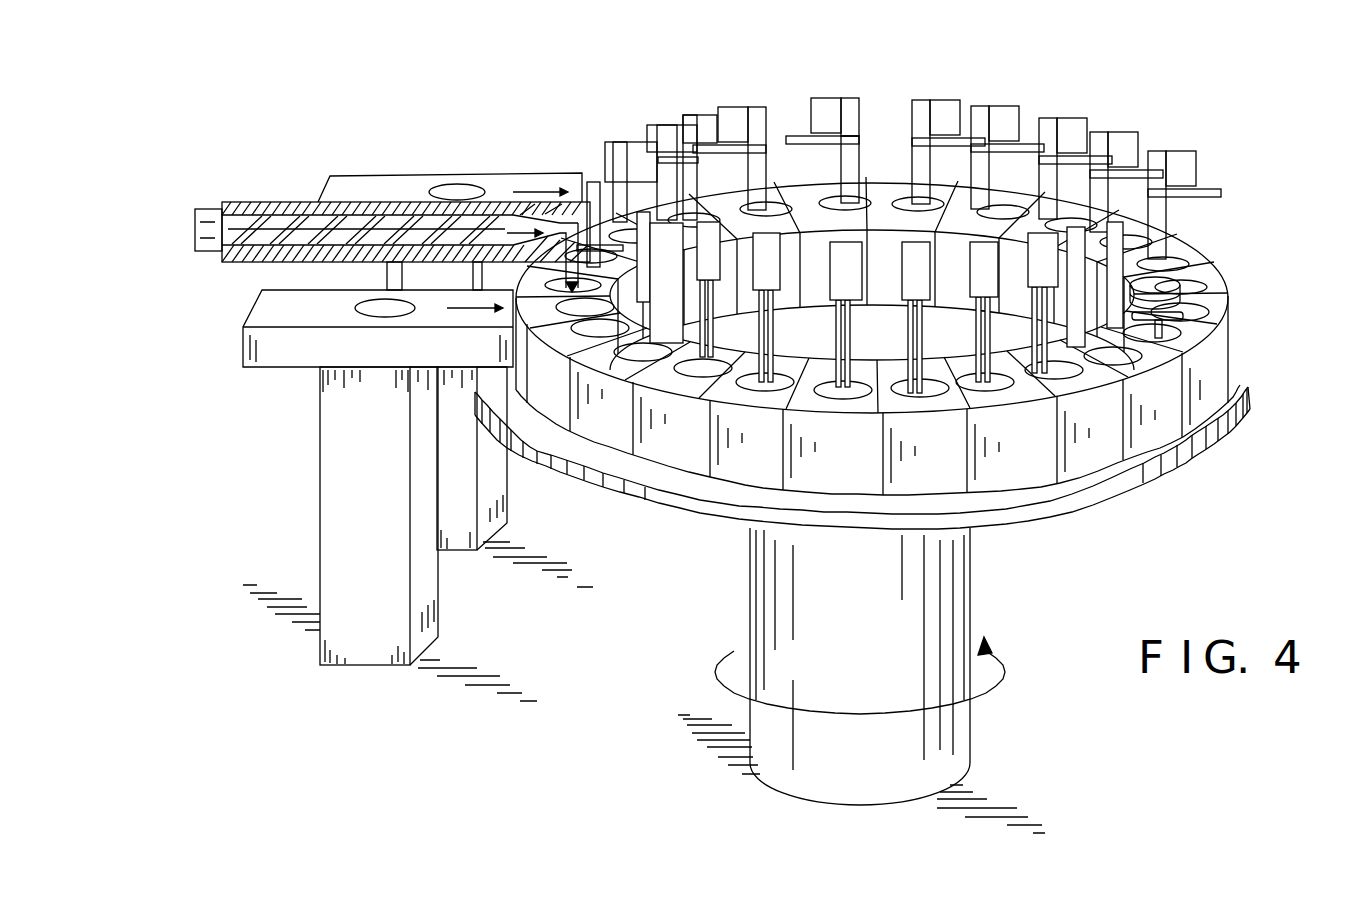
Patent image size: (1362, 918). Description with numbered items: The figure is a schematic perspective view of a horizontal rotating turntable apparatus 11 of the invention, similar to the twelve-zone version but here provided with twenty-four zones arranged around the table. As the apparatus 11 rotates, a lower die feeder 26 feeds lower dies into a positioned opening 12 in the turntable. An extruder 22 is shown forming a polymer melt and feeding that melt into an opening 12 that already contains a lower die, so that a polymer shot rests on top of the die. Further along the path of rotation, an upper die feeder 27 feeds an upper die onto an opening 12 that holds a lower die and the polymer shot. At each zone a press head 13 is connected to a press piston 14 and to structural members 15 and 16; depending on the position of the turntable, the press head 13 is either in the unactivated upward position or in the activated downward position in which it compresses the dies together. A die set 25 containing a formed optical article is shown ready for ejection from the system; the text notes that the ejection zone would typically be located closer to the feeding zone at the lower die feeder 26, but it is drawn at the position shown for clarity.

The apparatus 11 is at (1203, 357).
The opening 12 is at (900, 200).
The press head 13 is at (800, 132).
The press piston 14 is at (815, 98).
The structural member 15 is at (835, 105).
The structural member 16 is at (855, 137).
The extruder 22 is at (278, 208).
The die set 25 is at (1200, 290).
The lower die feeder 26 is at (390, 180).
The upper die feeder 27 is at (260, 313).